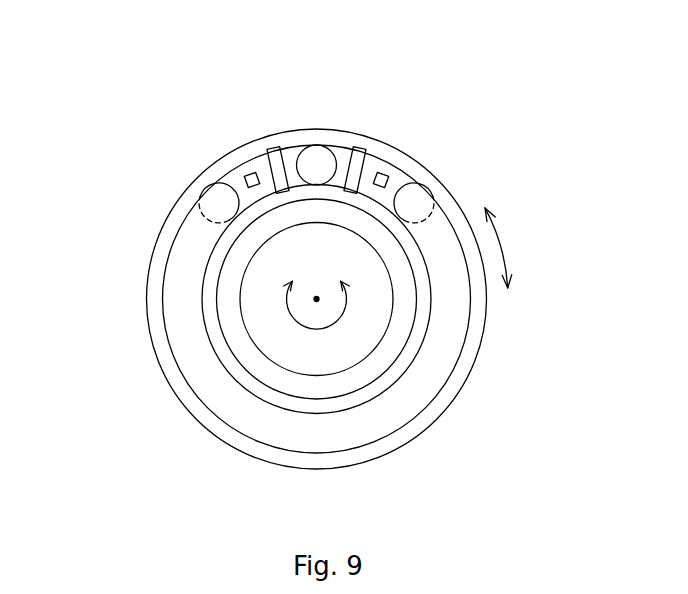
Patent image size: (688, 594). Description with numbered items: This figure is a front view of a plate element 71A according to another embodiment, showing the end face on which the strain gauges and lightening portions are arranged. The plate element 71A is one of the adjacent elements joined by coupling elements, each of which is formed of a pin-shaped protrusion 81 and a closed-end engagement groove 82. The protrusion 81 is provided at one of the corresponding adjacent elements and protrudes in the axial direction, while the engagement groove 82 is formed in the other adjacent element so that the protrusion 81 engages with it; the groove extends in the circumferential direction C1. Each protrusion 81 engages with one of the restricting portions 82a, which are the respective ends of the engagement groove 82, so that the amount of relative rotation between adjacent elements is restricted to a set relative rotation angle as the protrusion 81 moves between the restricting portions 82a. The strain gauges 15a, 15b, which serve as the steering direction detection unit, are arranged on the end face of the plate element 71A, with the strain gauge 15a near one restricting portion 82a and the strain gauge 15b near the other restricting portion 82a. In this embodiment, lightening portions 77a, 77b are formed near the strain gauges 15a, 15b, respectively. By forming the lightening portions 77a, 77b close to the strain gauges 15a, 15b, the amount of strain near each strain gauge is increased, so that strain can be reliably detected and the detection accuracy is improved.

The plate element 71A is at (330, 96).
The closed-end engagement groove 82 is at (287, 430).
The pin-shaped protrusion 81 is at (314, 146).
The restricting portion 82a is at (238, 222).
The strain gauge 15a is at (250, 174).
The strain gauge 15b is at (383, 174).
The lightening portion 77a is at (274, 156).
The lightening portion 77b is at (359, 156).
The circumferential direction C1 is at (503, 252).